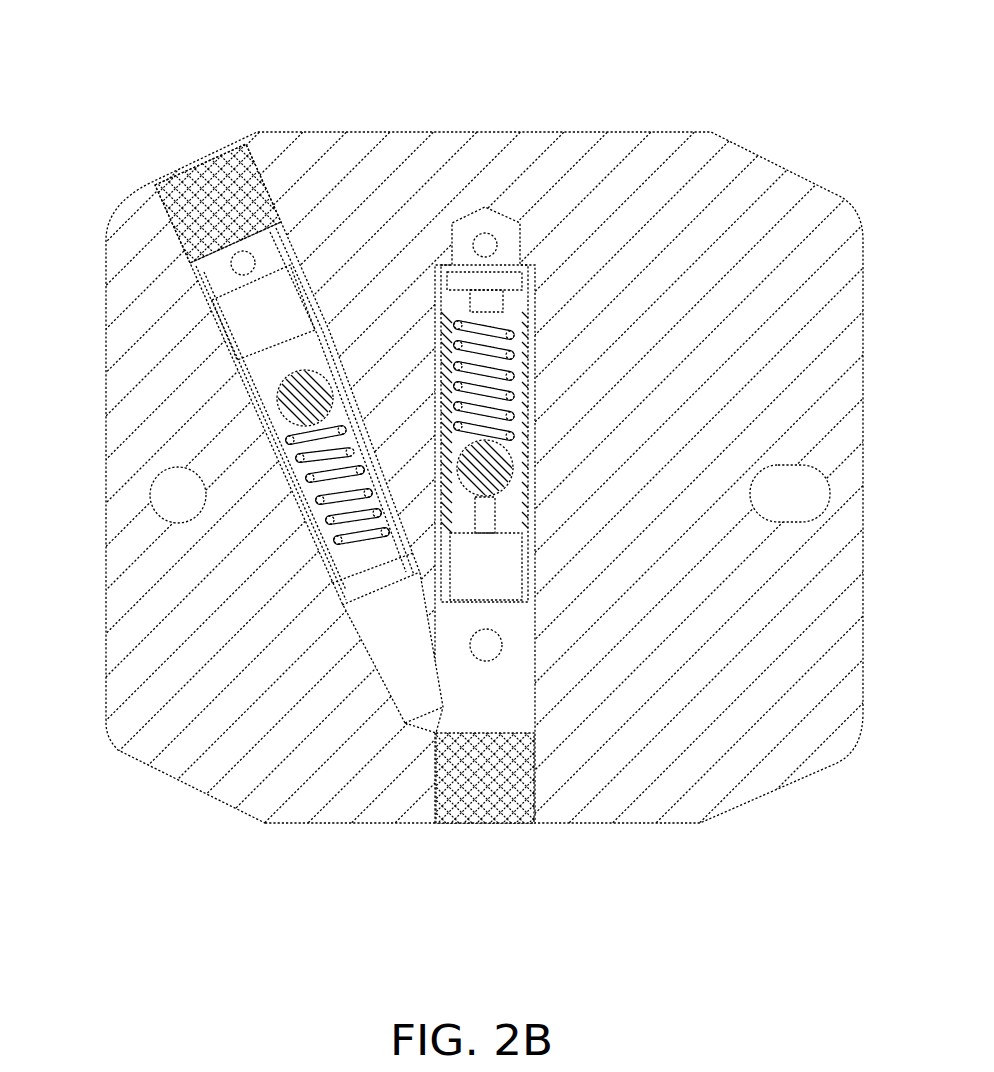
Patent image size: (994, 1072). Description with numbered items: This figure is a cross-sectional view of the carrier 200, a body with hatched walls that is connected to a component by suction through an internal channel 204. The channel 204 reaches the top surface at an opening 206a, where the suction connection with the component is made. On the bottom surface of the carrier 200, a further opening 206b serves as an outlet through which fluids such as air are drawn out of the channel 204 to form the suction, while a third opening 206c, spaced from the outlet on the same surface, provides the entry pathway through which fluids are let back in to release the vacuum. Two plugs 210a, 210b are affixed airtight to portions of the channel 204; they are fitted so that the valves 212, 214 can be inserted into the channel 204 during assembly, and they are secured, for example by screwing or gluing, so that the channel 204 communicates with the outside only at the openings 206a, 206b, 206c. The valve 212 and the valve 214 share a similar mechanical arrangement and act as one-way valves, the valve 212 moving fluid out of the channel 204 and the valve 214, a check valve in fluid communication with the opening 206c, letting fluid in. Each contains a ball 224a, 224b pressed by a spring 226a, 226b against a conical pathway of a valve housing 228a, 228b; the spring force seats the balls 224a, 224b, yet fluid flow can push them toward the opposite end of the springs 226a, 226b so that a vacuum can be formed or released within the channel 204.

The carrier 200 is at (92, 134).
The channel 204 is at (685, 491).
The opening 206a is at (500, 655).
The opening 206b is at (492, 236).
The opening 206c is at (232, 270).
The plug 210a is at (473, 825).
The plug 210b is at (188, 167).
The valve 212 is at (604, 343).
The valve 214 is at (236, 403).
The ball 224a is at (512, 467).
The ball 224b is at (280, 389).
The spring 226a is at (518, 333).
The spring 226b is at (288, 442).
The valve housing 228a is at (522, 363).
The valve housing 228b is at (338, 392).